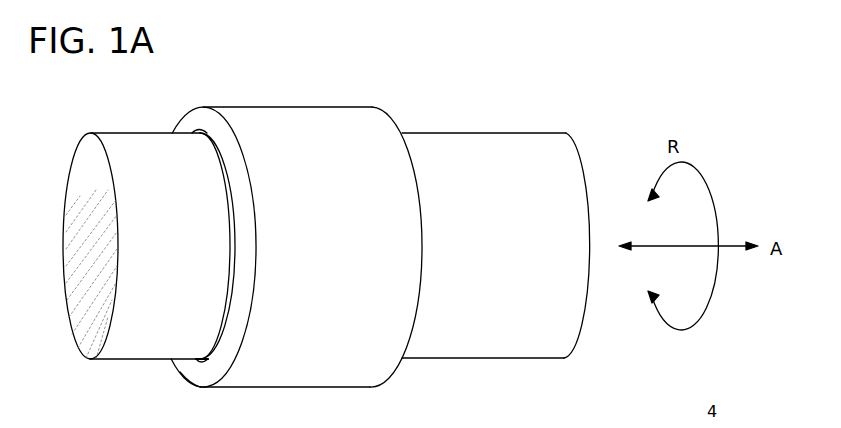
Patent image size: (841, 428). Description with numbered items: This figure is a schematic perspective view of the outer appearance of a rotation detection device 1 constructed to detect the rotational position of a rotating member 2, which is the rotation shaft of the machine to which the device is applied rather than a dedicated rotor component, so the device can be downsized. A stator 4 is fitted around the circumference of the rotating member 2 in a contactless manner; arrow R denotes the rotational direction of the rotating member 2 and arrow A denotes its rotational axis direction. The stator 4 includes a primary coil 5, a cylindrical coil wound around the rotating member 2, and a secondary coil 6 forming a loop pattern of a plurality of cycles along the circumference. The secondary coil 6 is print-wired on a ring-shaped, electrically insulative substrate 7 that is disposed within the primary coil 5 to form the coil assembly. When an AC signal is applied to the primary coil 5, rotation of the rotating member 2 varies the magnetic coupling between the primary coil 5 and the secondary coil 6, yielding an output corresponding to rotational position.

The rotation detection device 1 is at (425, 90).
The rotating member 2 is at (487, 133).
The stator 4 is at (291, 103).
The primary coil 5 is at (196, 389).
The secondary coil 6 is at (188, 372).
The substrate 7 is at (195, 131).